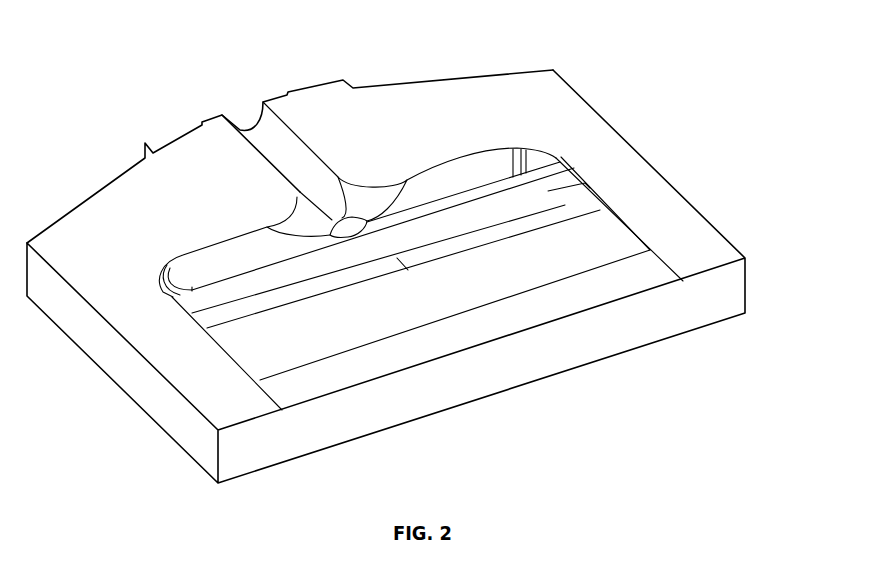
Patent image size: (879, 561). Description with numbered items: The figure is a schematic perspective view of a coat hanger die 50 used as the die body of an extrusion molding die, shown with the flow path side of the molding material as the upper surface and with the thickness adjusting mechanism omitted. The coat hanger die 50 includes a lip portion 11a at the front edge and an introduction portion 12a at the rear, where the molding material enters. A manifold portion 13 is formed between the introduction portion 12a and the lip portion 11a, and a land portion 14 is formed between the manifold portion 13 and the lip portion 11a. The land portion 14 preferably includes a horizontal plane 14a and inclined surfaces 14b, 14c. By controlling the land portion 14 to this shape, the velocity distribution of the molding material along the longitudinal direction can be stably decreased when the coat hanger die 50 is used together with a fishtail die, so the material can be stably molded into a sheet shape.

The coat hanger die 50 is at (630, 91).
The lip portion 11a is at (473, 328).
The introduction portion 12a is at (273, 147).
The manifold portion 13 is at (460, 190).
The land portion 14 is at (488, 211).
The horizontal plane 14a is at (555, 188).
The inclined surface 14b is at (582, 223).
The inclined surface 14c is at (570, 202).